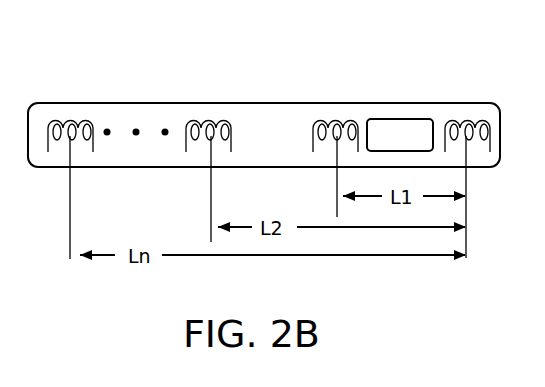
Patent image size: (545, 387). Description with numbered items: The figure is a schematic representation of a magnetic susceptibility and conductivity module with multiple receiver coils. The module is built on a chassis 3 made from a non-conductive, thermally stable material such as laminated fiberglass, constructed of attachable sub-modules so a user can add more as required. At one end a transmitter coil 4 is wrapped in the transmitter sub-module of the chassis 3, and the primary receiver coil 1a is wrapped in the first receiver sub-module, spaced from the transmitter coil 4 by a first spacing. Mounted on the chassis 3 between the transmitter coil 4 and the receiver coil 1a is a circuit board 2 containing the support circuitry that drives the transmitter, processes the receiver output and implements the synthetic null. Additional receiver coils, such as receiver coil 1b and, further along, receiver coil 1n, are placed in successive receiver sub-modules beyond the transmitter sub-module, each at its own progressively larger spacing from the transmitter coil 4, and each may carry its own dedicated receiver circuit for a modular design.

The receiver coil 1a is at (338, 112).
The receiver coil 1b is at (216, 112).
The receiver coil 1n is at (86, 112).
The circuit board 2 is at (419, 117).
The chassis 3 is at (276, 124).
The transmitter coil 4 is at (468, 117).